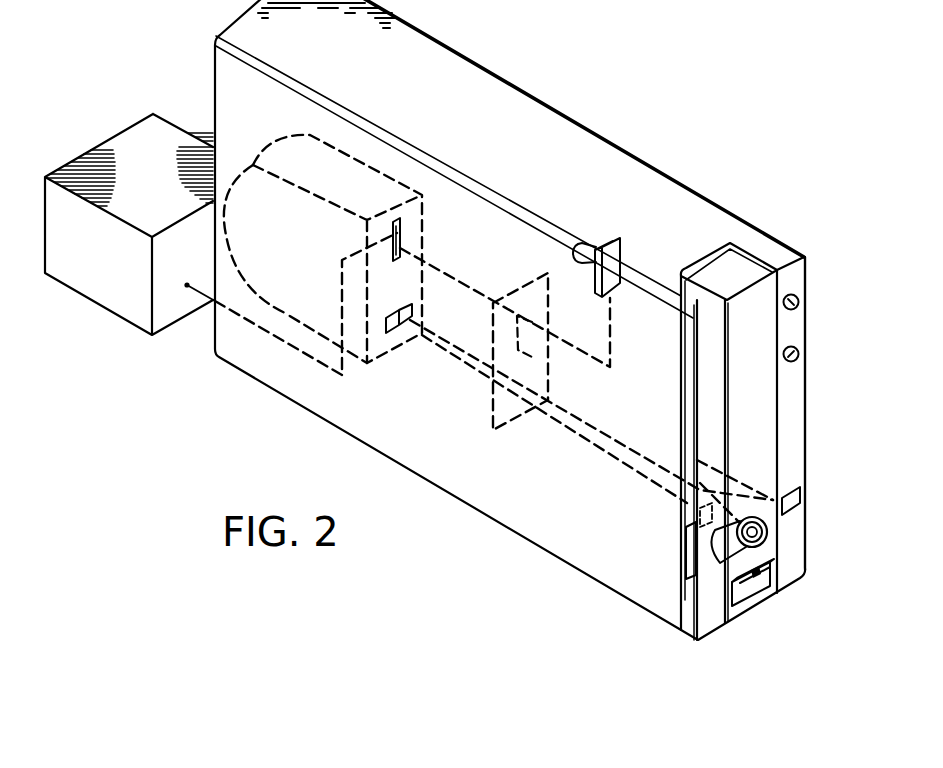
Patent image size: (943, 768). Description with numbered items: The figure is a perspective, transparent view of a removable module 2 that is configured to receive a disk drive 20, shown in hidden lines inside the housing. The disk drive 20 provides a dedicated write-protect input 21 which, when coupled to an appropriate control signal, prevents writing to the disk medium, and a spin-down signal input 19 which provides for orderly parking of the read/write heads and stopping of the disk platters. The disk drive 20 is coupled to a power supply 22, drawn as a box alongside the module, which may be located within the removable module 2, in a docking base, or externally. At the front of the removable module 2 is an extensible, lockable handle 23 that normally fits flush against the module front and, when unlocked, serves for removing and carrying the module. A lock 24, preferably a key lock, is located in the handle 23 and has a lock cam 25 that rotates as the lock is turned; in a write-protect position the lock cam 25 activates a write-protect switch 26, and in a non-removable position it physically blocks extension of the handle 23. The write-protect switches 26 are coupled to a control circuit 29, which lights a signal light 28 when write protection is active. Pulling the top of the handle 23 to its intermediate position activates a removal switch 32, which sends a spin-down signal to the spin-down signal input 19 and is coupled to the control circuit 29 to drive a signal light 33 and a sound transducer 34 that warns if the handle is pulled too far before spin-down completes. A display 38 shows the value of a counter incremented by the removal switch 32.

The removable module 2 is at (533, 94).
The spin-down signal input 19 is at (402, 231).
The disk drive 20 is at (285, 290).
The write-protect input 21 is at (388, 332).
The power supply 22 is at (108, 150).
The handle 23 is at (757, 420).
The lock 24 is at (762, 533).
The lock cam 25 is at (712, 575).
The write-protect switch 26 is at (688, 568).
The signal light 28 is at (799, 301).
The control circuit 29 is at (537, 305).
The removal switch 32 is at (612, 245).
The signal light 33 is at (799, 351).
The sound transducer 34 is at (494, 424).
The display 38 is at (799, 497).